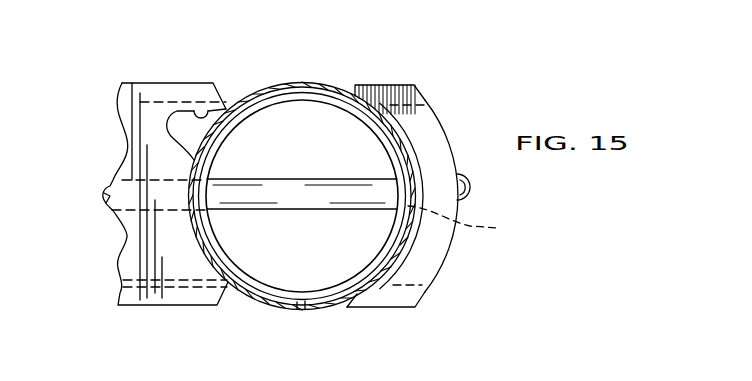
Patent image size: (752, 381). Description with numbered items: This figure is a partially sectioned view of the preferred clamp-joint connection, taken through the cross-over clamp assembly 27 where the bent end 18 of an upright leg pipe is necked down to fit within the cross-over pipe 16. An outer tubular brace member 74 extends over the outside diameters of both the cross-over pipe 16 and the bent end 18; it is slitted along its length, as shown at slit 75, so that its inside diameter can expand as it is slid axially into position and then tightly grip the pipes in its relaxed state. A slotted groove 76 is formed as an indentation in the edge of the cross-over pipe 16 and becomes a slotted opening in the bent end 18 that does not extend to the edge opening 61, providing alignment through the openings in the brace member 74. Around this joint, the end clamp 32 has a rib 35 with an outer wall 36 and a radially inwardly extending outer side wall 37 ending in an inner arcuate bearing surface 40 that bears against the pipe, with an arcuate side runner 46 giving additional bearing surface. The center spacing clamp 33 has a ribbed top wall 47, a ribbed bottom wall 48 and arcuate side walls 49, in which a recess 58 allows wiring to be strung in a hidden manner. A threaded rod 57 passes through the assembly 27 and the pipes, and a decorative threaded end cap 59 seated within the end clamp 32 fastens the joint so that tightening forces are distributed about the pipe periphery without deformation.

The cross-over clamp assembly 27 is at (112, 131).
The center spacing clamp 33 is at (132, 79).
The ribbed top wall 47 is at (157, 93).
The recess 58 is at (220, 104).
The arcuate side wall 49 is at (137, 240).
The ribbed bottom wall 48 is at (138, 296).
The cross-over pipe 16 is at (243, 293).
The edge opening 61 is at (268, 293).
The outer tubular brace member 74 is at (283, 80).
The bent end 18 is at (317, 97).
The slit 75 is at (297, 310).
The inner arcuate bearing surface 40 is at (343, 298).
The side runner 46 is at (362, 90).
The outer side wall 37 is at (403, 104).
The end clamp 32 is at (438, 109).
The rib 35 is at (447, 124).
The outer wall 36 is at (450, 253).
The threaded end cap 59 is at (471, 189).
The slotted groove 76 is at (467, 222).
The threaded rod 57 is at (268, 189).